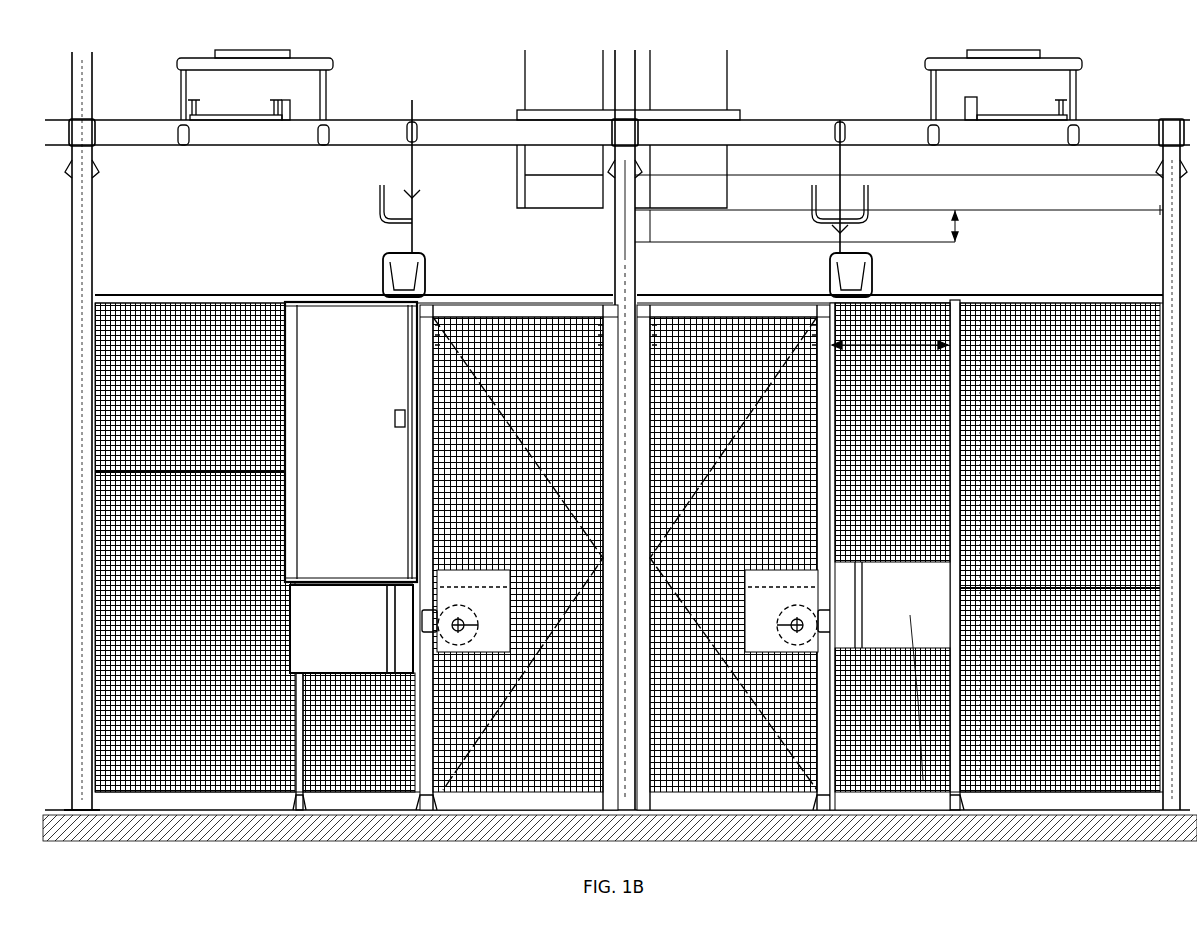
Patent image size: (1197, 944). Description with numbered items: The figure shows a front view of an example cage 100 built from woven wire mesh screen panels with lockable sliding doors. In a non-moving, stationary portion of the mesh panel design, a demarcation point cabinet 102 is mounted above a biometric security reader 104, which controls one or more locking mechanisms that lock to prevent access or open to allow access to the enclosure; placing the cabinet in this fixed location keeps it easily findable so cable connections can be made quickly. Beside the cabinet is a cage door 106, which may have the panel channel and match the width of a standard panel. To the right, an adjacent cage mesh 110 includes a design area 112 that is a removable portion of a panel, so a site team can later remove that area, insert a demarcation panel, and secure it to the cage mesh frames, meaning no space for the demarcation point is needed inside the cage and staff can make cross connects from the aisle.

The cage 100 is at (146, 268).
The demarcation point cabinet 102 is at (344, 348).
The biometric security reader 104 is at (351, 628).
The cage door 106 is at (527, 300).
The cage mesh 110 is at (757, 280).
The design area 112 is at (895, 296).